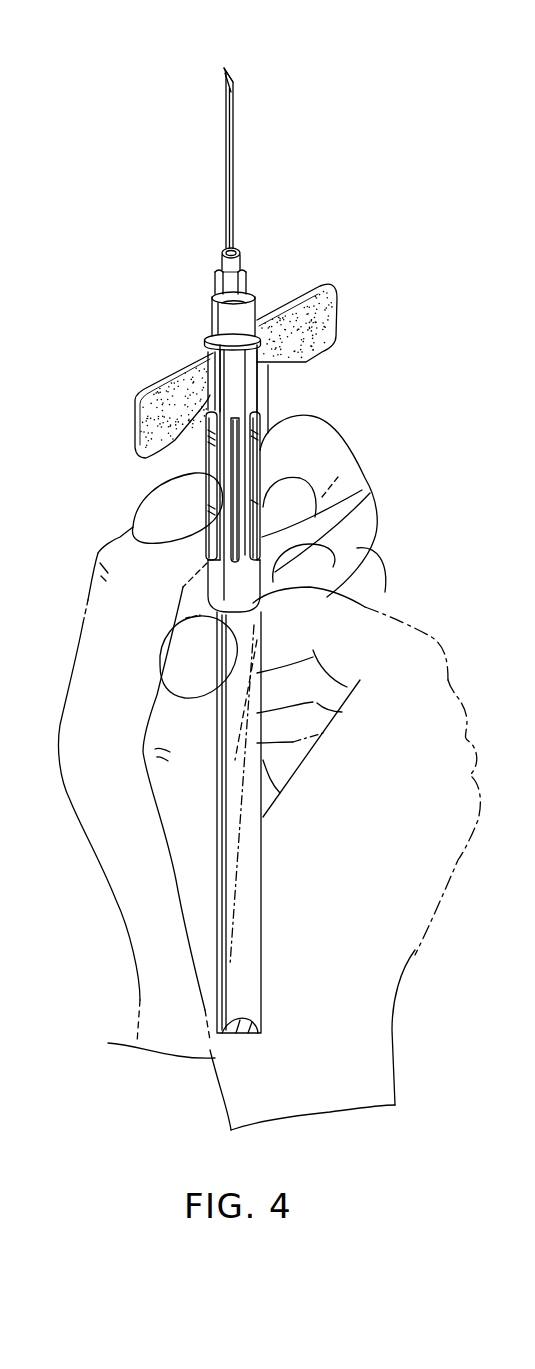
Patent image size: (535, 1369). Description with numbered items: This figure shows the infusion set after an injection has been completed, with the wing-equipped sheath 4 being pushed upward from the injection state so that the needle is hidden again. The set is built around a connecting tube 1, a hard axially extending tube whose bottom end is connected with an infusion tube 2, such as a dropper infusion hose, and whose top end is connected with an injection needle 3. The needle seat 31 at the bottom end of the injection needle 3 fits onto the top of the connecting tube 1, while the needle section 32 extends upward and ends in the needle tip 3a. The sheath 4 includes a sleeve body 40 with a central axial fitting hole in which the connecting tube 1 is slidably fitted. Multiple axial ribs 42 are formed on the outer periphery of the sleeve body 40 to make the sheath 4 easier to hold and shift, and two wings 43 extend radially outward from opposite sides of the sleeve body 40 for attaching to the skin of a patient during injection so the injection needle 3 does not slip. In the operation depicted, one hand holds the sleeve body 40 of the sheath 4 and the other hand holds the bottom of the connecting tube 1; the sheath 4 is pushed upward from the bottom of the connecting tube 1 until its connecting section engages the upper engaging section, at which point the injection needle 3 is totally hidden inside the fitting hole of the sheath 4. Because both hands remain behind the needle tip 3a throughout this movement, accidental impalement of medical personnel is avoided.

The connecting tube 1 is at (231, 583).
The infusion tube 2 is at (243, 848).
The injection needle 3 is at (247, 250).
The needle tip 3a is at (224, 70).
The needle seat 31 is at (230, 318).
The needle section 32 is at (228, 158).
The wing-equipped sheath 4 is at (258, 401).
The sleeve body 40 is at (243, 397).
The axial ribs 42 is at (213, 462).
The wings 43 is at (328, 320).